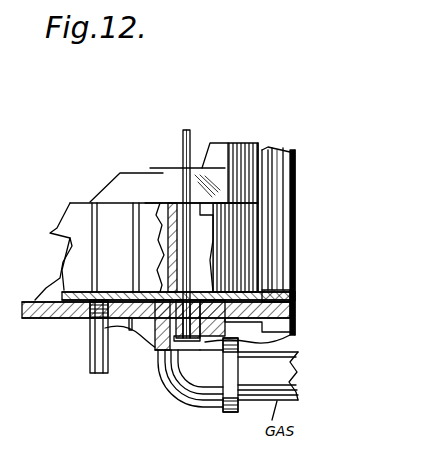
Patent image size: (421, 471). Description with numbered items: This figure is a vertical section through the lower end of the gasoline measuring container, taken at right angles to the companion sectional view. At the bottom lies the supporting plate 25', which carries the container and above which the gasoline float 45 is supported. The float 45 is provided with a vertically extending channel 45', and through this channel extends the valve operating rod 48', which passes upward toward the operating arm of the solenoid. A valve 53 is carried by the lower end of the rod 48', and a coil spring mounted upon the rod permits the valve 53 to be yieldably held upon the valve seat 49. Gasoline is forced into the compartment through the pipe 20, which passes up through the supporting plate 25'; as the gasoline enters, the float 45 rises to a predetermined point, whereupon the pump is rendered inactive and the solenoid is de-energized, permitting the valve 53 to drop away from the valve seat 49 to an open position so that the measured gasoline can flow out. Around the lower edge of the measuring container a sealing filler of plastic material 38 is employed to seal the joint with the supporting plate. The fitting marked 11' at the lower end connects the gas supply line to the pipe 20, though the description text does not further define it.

The gasoline float 45 is at (165, 239).
The vertically extending channel 45' is at (180, 174).
The valve operating rod 48' is at (208, 226).
The sealing filler of plastic material 38 is at (300, 292).
The supporting plate 25' is at (149, 328).
The pipe 20 is at (92, 368).
The valve seat 49 is at (152, 345).
The valve 53 is at (163, 372).
The gas pipe 11' is at (231, 396).